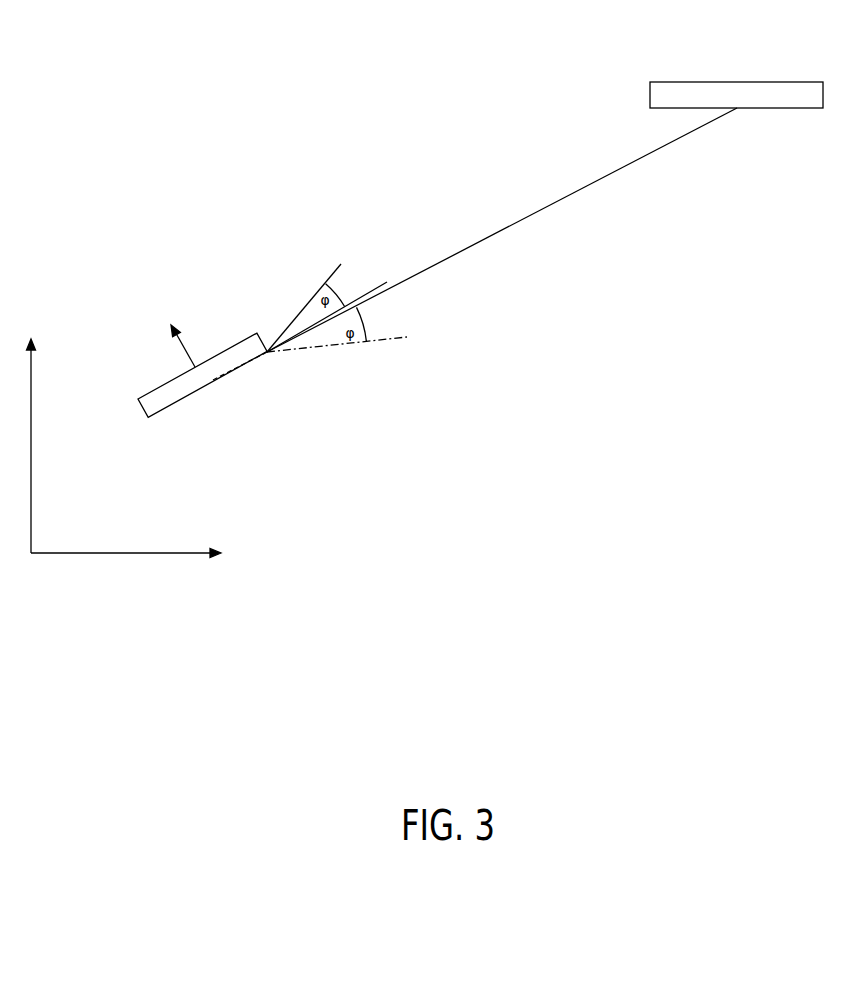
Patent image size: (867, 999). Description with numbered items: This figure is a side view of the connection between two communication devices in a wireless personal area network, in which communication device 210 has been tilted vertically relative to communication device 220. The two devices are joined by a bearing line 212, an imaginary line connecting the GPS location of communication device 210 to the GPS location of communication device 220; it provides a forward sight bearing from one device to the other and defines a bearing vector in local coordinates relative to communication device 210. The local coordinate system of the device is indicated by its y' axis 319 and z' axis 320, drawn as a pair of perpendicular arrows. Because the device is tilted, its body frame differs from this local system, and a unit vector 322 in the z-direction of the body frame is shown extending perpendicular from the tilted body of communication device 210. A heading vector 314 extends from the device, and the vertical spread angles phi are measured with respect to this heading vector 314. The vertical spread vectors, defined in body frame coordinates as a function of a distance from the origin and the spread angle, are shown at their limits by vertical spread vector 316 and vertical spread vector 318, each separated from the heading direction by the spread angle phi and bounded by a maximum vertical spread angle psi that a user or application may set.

The communication device 210 is at (218, 355).
The bearing line 212 is at (512, 226).
The communication device 220 is at (798, 82).
The heading vector 314 is at (386, 283).
The vertical spread vector 316 is at (342, 263).
The vertical spread vector 318 is at (401, 335).
The y' axis 319 is at (152, 553).
The z' axis 320 is at (32, 420).
The unit vector 322 is at (178, 325).